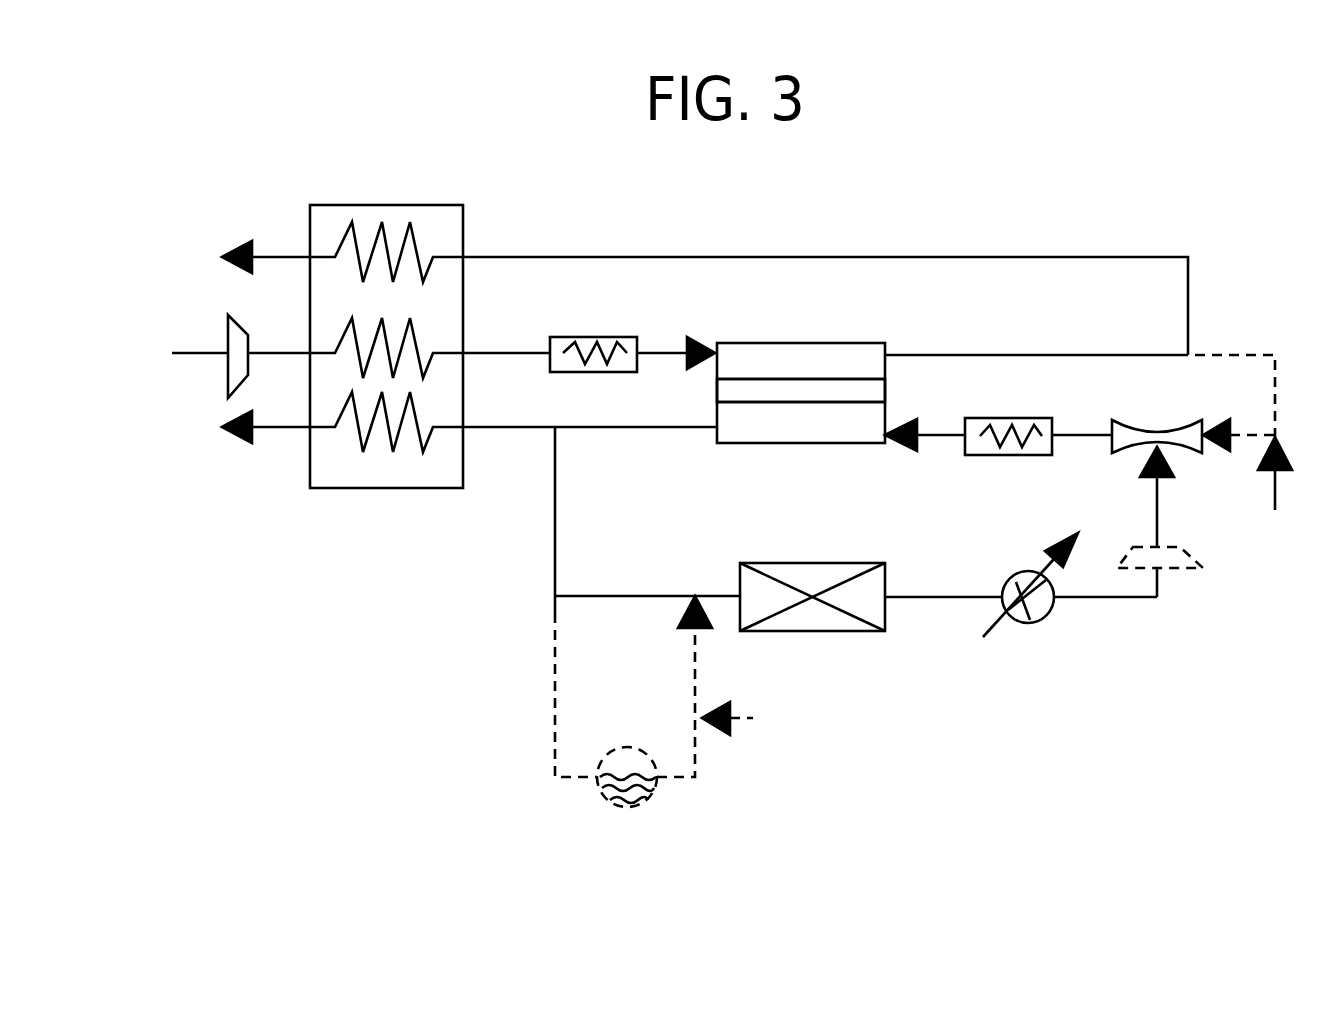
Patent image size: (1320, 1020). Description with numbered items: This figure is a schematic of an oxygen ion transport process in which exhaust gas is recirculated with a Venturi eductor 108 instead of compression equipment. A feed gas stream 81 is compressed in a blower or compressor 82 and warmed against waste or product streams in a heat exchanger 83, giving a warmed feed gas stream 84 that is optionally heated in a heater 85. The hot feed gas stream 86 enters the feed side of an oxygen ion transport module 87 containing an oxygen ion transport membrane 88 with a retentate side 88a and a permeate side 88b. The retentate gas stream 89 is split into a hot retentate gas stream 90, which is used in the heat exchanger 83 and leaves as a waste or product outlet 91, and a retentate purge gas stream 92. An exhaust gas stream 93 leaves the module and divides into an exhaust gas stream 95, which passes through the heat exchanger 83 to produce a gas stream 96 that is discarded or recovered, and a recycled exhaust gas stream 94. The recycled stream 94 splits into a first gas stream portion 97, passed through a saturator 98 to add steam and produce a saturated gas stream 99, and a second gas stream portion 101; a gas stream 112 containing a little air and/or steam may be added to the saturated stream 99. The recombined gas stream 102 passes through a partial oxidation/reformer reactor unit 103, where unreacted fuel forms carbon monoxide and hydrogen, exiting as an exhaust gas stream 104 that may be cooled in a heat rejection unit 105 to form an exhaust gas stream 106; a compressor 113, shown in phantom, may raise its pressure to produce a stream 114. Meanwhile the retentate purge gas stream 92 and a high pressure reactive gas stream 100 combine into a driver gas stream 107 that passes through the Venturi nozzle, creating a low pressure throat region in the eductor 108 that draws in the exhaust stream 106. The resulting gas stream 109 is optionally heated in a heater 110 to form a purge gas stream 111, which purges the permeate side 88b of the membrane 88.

The feed gas stream 81 is at (202, 353).
The blower or compressor 82 is at (240, 328).
The heat exchanger 83 is at (358, 488).
The warmed feed gas stream 84 is at (513, 353).
The heater 85 is at (593, 337).
The hot feed gas stream 86 is at (657, 355).
The oxygen ion transport module 87 is at (867, 343).
The oxygen ion transport membrane 88 is at (887, 385).
The retentate side 88a is at (798, 378).
The permeate side 88b is at (790, 403).
The retentate gas stream 89 is at (1060, 355).
The hot retentate gas stream 90 is at (937, 257).
The exhaust outlet 91 is at (283, 252).
The retentate purge gas stream 92 is at (1265, 355).
The exhaust gas stream 93 is at (657, 430).
The recycled exhaust gas stream 94 is at (555, 538).
The exhaust gas stream 95 is at (508, 428).
The gas stream 96 is at (285, 428).
The first gas stream portion 97 is at (556, 662).
The saturator 98 is at (637, 807).
The saturated gas stream 99 is at (695, 745).
The high pressure reactive gas stream 100 is at (1275, 490).
The second gas stream portion 101 is at (655, 596).
The gas stream 102 is at (712, 600).
The partial oxidation/reformer reactor unit 103 is at (802, 565).
The exhaust gas stream 104 is at (940, 600).
The heat rejection unit 105 is at (1057, 605).
The exhaust gas stream 106 is at (1167, 598).
The gas stream 107 is at (1257, 437).
The Venturi eductor 108 is at (1137, 450).
The gas stream 109 is at (1078, 437).
The heater 110 is at (1033, 418).
The purge gas stream 111 is at (942, 435).
The gas stream 112 is at (763, 718).
The compressor 113 is at (1203, 572).
The stream 114 is at (1157, 520).